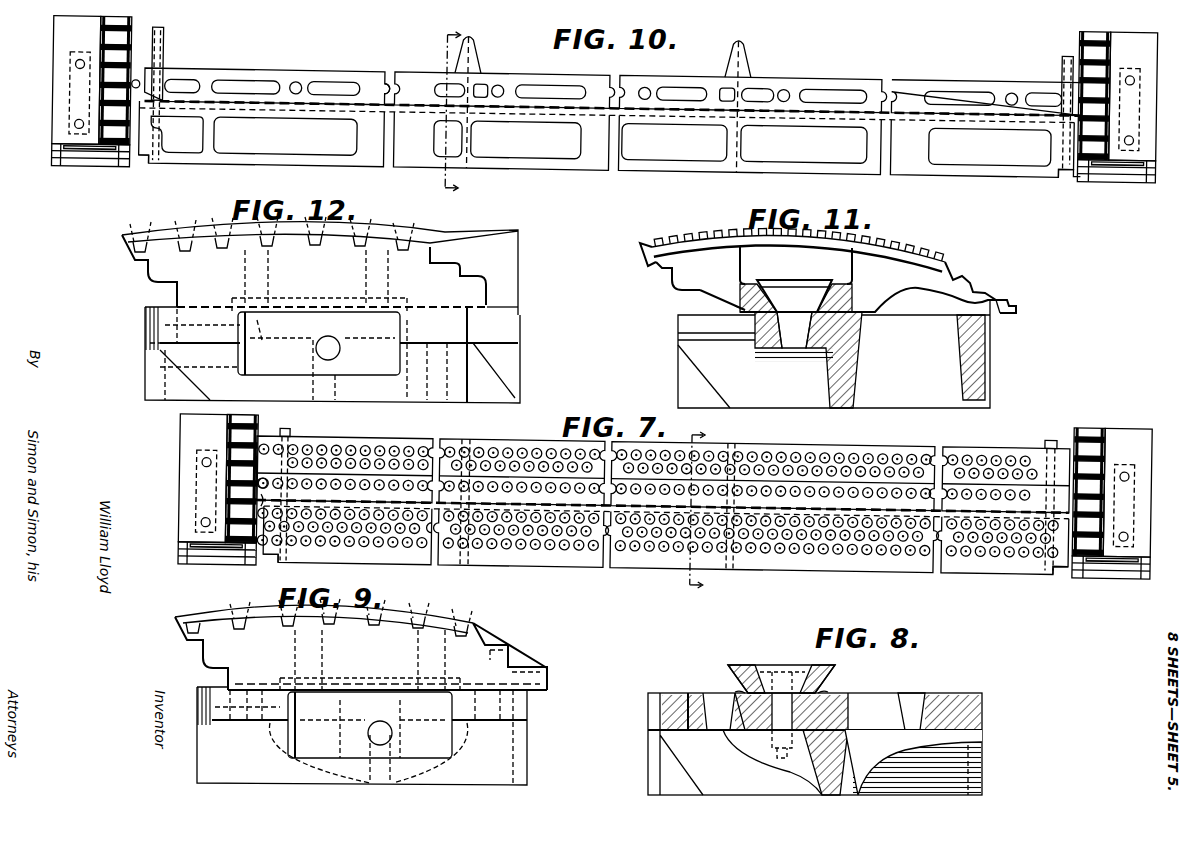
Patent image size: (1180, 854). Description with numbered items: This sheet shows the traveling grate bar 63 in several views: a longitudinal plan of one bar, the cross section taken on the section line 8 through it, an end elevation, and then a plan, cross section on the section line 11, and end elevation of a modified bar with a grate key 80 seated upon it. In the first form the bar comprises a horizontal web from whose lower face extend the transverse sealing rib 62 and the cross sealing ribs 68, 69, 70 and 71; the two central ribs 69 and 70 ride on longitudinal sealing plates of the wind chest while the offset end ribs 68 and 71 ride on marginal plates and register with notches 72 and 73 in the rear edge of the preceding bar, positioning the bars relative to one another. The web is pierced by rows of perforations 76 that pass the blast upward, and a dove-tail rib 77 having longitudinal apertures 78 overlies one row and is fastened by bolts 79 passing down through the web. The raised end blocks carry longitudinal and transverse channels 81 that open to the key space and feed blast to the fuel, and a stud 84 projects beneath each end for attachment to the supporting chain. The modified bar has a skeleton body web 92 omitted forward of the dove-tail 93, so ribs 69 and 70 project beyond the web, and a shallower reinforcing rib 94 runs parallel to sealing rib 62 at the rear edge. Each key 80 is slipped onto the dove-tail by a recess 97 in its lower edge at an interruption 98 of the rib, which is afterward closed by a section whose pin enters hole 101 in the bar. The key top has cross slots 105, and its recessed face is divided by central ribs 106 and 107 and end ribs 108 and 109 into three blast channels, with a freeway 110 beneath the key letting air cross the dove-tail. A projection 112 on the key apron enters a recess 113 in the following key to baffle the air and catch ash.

In FIG. 7, the section line 8— 8 is at (703, 509).
In FIG. 10, the section line 11— 11 is at (462, 110).
In FIG. 11, the transverse sealing rib 62 is at (835, 388).
In FIG. 8, the transverse sealing rib 62 is at (824, 772).
In FIG. 11, the grate bar 63 is at (858, 338).
In FIG. 12, the grate bar 63 is at (321, 310).
In FIG. 7, the grate bar 63 is at (180, 490).
In FIG. 9, the grate bar 63 is at (361, 692).
In FIG. 8, the grate bar 63 is at (845, 708).
In FIG. 10, the end cross sealing rib 68 is at (164, 48).
In FIG. 7, the end cross sealing rib 68 is at (290, 428).
In FIG. 10, the central cross sealing rib 69 is at (478, 52).
In FIG. 11, the central cross sealing rib 69 is at (755, 370).
In FIG. 7, the central cross sealing rib 69 is at (470, 437).
In FIG. 10, the central cross sealing rib 70 is at (748, 52).
In FIG. 7, the central cross sealing rib 70 is at (736, 440).
In FIG. 10, the end cross sealing rib 71 is at (1062, 64).
In FIG. 7, the end cross sealing rib 71 is at (1052, 434).
In FIG. 10, the notch 72 is at (152, 163).
In FIG. 7, the notch 72 is at (283, 563).
In FIG. 10, the notch 73 is at (1068, 163).
In FIG. 7, the notch 73 is at (1058, 564).
In FIG. 7, the perforations 76 is at (872, 462).
In FIG. 8, the perforations 76 is at (913, 744).
In FIG. 11, the dove-tail rib 77 is at (840, 296).
In FIG. 7, the dove-tail rib 77 is at (660, 530).
In FIG. 8, the dove-tail rib 77 is at (738, 686).
In FIG. 11, the longitudinal apertures 78 is at (793, 314).
In FIG. 8, the longitudinal apertures 78 is at (765, 668).
In FIG. 8, the bolts 79 is at (766, 752).
In FIG. 11, the grate key 80 is at (690, 292).
In FIG. 10, the longitudinal and transverse channels 81 is at (103, 40).
In FIG. 7, the longitudinal and transverse channels 81 is at (252, 430).
In FIG. 12, the stud 84 is at (319, 356).
In FIG. 9, the stud 84 is at (370, 725).
In FIG. 10, the body web 92 is at (296, 150).
In FIG. 10, the dove-tail 93 is at (372, 72).
In FIG. 11, the reinforcing rib 94 is at (960, 372).
In FIG. 11, the recess 97 is at (738, 306).
In FIG. 10, the interruption space 98 is at (150, 101).
In FIG. 7, the interruption space 98 is at (266, 505).
In FIG. 10, the hole 101 is at (138, 80).
In FIG. 7, the hole 101 is at (279, 482).
In FIG. 11, the cross slot 105 is at (704, 244).
In FIG. 11, the central rib 106 is at (742, 263).
In FIG. 11, the central rib 107 is at (850, 263).
In FIG. 11, the end rib 108 is at (677, 270).
In FIG. 11, the end rib 109 is at (998, 304).
In FIG. 11, the freeway 110 is at (801, 280).
In FIG. 11, the projection 112 is at (976, 284).
In FIG. 11, the recess 113 is at (658, 274).